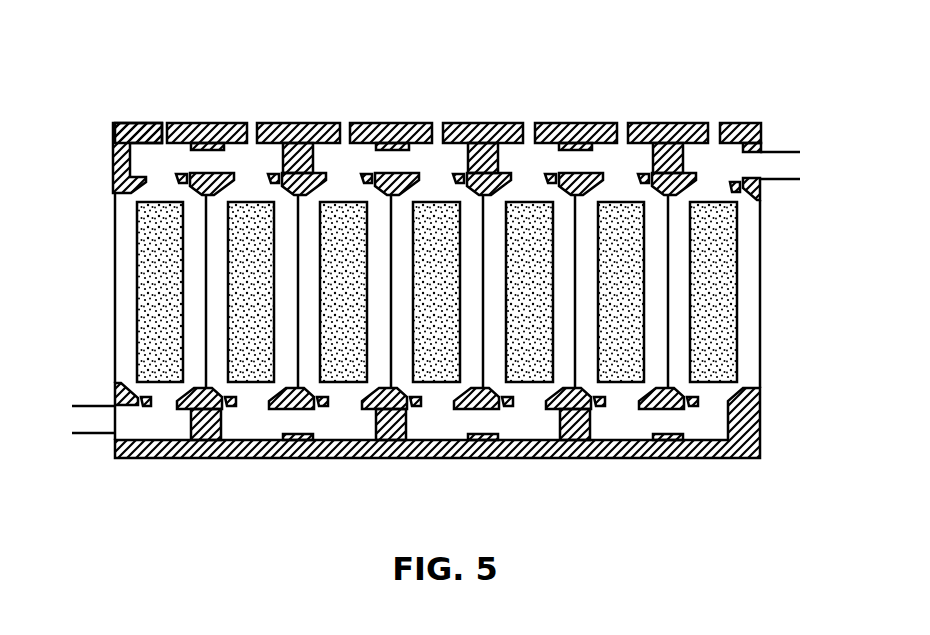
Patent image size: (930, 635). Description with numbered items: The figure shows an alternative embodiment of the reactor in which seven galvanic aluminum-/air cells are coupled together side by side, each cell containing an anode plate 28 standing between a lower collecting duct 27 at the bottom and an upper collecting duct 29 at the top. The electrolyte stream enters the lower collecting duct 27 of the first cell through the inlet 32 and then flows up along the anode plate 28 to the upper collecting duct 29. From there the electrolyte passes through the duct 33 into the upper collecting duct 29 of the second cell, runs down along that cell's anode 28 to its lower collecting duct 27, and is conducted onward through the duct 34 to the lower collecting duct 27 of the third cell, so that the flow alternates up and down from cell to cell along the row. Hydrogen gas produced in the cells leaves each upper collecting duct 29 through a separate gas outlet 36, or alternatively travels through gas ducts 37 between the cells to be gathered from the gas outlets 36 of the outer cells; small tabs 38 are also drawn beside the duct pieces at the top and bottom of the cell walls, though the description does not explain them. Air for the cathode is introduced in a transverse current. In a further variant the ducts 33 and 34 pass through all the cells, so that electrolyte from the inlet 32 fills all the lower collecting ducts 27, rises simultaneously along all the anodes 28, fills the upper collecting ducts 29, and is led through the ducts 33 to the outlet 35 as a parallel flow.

The lower collecting duct 27 is at (157, 430).
The anode plate 28 is at (153, 267).
The upper collecting duct 29 is at (143, 155).
The inlet 32 is at (93, 425).
The duct 33 is at (213, 160).
The duct 34 is at (302, 425).
The outlet 35 is at (783, 160).
The gas outlet 36 is at (160, 123).
The gas duct 37 is at (308, 160).
The retaining tabs 38 is at (188, 176).